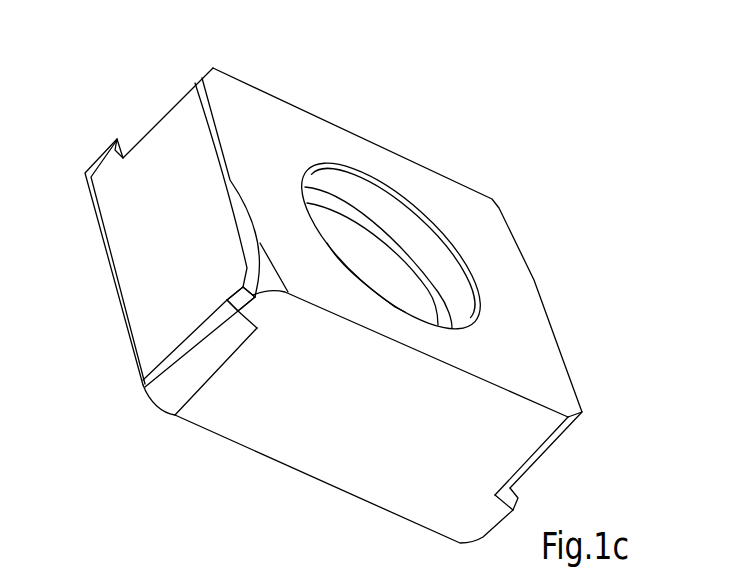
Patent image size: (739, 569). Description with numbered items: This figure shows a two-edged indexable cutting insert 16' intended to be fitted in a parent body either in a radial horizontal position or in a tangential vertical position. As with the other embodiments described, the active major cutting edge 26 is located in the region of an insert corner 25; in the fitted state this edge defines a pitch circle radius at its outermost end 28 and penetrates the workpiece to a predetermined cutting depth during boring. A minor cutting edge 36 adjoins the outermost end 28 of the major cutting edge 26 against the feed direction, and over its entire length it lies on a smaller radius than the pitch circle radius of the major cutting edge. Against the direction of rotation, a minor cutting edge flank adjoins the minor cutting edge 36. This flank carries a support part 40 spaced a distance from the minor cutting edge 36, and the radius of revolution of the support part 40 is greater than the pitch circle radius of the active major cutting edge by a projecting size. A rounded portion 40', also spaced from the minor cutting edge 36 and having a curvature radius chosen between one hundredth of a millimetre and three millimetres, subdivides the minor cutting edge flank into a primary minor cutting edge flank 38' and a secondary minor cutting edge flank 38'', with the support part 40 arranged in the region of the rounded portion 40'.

The cutting insert 16' is at (333, 278).
The outermost end 28 is at (242, 286).
The insert corner 25 is at (258, 282).
The active major cutting edge 26 is at (270, 295).
The minor cutting edge 36 is at (270, 295).
The support part 40 is at (178, 258).
The rounded portion 40' is at (241, 299).
The secondary minor cutting edge flank 38'' is at (117, 328).
The primary minor cutting edge flank 38' is at (174, 393).